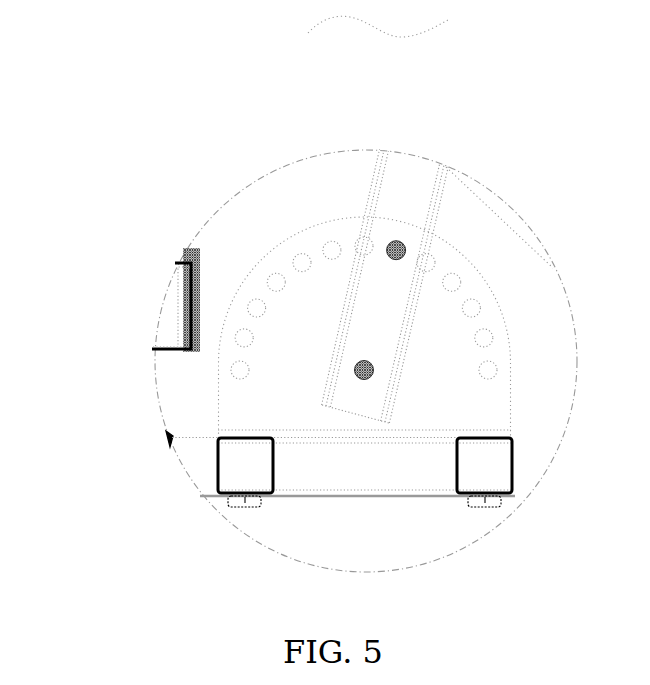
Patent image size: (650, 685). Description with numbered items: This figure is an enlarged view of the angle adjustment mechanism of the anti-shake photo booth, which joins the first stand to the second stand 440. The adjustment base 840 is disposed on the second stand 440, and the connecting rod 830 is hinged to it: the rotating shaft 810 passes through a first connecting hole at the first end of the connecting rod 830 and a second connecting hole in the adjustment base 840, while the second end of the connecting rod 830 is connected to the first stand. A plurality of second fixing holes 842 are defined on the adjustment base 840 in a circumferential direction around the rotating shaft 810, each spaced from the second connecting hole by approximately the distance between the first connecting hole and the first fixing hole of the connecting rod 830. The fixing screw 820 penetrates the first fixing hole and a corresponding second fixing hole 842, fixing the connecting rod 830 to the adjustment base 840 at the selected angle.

The second stand 440 is at (292, 477).
The rotating shaft 810 is at (364, 380).
The fixing screw 820 is at (406, 247).
The connecting rod 830 is at (415, 188).
The adjustment base 840 is at (287, 390).
The second fixing holes 842 is at (270, 278).